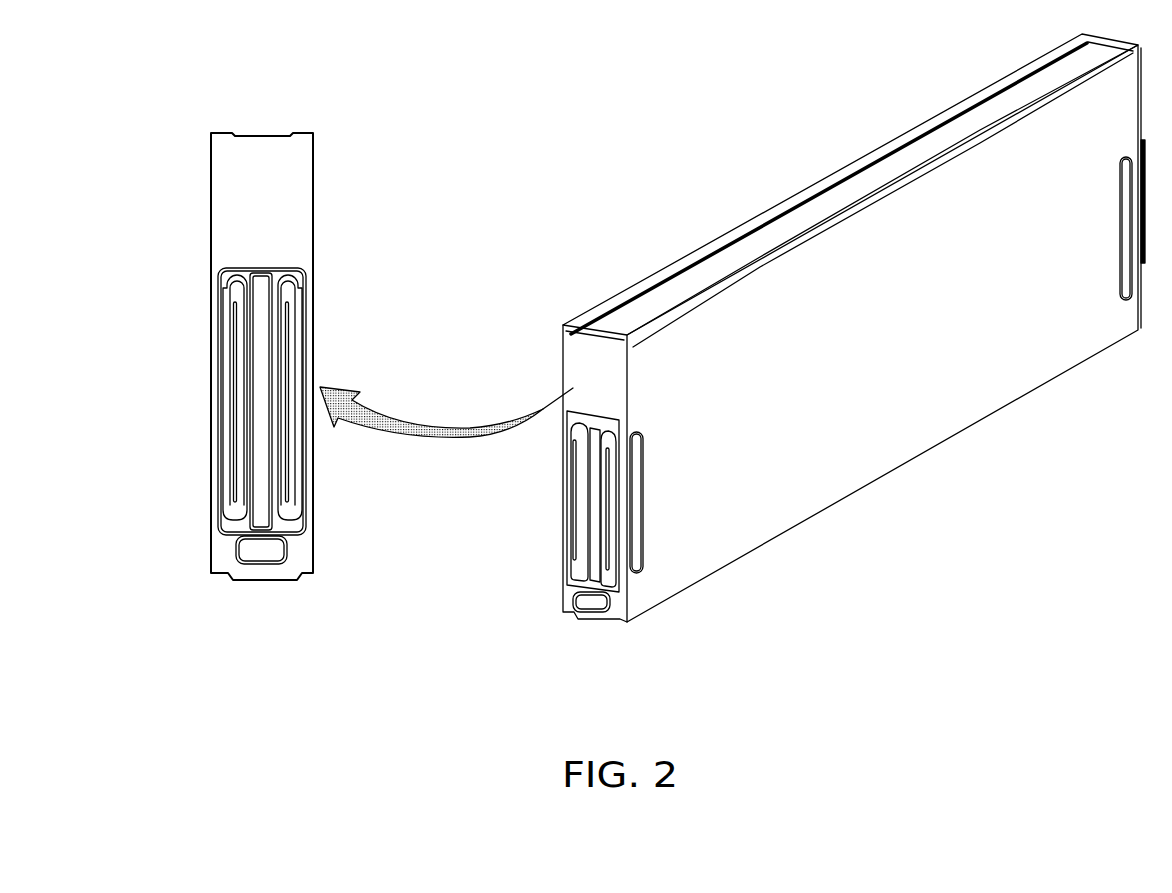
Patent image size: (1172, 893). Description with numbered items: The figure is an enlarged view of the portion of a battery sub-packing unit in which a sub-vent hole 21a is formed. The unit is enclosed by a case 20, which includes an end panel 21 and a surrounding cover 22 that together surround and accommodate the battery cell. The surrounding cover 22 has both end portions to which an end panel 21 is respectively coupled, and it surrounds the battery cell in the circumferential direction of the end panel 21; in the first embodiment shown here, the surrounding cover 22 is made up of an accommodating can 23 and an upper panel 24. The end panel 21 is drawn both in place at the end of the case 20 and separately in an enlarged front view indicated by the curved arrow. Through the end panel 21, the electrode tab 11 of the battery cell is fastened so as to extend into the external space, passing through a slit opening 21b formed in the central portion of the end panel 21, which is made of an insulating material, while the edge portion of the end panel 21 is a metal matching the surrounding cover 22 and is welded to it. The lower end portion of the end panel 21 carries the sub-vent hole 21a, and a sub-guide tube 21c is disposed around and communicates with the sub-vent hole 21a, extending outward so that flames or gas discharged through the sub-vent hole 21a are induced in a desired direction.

The electrode tab 11 is at (288, 470).
The case 20 is at (854, 381).
The end panel 21 is at (598, 377).
The sub-vent hole 21a is at (268, 551).
The slit opening 21b is at (237, 488).
The sub-guide tube 21c is at (236, 556).
The surrounding cover 22 is at (854, 365).
The accommodating can 23 is at (853, 438).
The upper panel 24 is at (773, 230).